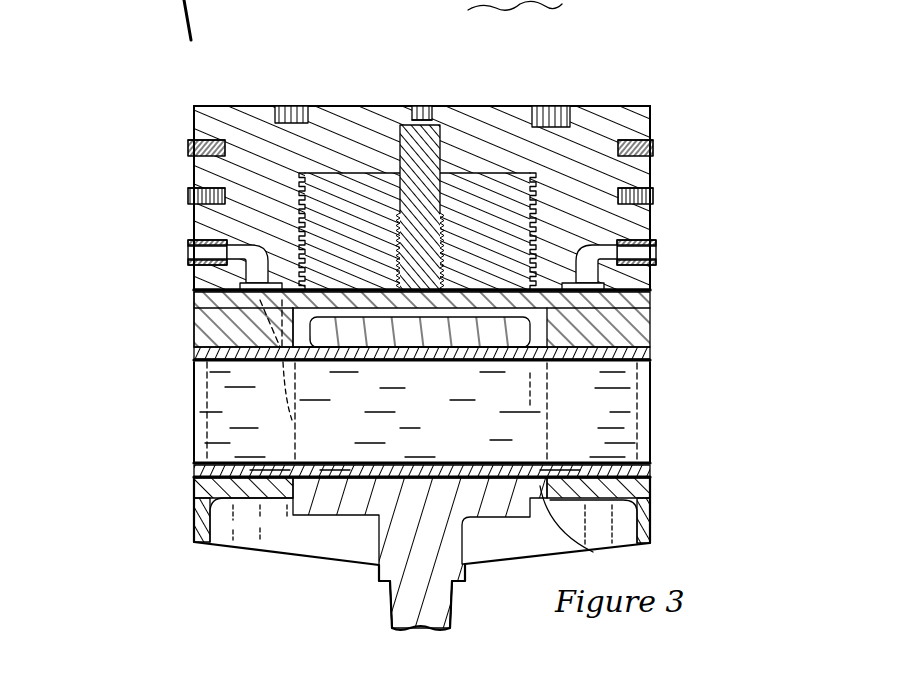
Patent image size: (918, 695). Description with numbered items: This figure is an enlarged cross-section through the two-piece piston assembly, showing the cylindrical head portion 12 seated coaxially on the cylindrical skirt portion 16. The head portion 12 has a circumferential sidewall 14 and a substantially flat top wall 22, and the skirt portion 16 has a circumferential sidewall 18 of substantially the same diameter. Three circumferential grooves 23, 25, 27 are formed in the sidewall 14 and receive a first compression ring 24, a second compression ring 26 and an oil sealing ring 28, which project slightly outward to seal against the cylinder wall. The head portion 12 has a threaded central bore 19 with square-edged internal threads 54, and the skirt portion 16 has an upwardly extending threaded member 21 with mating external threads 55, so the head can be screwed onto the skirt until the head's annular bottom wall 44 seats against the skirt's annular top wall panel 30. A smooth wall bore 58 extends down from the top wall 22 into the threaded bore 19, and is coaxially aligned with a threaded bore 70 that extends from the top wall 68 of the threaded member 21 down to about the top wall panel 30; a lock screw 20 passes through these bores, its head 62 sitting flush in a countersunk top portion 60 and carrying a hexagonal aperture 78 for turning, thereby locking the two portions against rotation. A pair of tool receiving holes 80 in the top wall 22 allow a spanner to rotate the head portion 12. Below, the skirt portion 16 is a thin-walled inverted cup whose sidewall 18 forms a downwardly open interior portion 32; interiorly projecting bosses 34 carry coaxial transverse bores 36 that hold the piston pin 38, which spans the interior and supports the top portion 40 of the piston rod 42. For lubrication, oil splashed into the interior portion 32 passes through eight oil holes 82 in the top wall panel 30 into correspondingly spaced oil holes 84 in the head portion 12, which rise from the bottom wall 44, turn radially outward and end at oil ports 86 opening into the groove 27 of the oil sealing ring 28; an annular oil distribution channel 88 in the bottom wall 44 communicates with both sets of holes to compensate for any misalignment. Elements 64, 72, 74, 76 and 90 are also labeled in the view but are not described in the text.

The head portion 12 is at (223, 128).
The sidewall of head portion 14 is at (194, 165).
The skirt portion 16 is at (650, 500).
The sidewall of skirt portion 18 is at (200, 500).
The threaded central bore 19 is at (556, 215).
The lock screw 20 is at (440, 128).
The threaded member 21 is at (470, 300).
The top wall 22 is at (250, 105).
The circumferential groove 23 is at (195, 128).
The first compression ring 24 is at (188, 143).
The circumferential groove 25 is at (217, 175).
The second compression ring 26 is at (188, 190).
The circumferential groove 27 is at (193, 240).
The oil sealing ring 28 is at (194, 252).
The annular top wall panel 30 is at (532, 300).
The interior portion 32 is at (593, 552).
The bosses 34 is at (193, 473).
The transverse bore 36 is at (213, 450).
The piston pin 38 is at (200, 400).
The top portion of piston rod 40 is at (333, 495).
The piston rod 42 is at (413, 598).
The annular bottom wall 44 is at (652, 313).
The internal threads 54 is at (217, 231).
The external threads 55 is at (356, 215).
The smooth wall bore 58 is at (487, 130).
The countersunk top portion 60 is at (372, 128).
The head of lock screw 62 is at (390, 107).
The hidden passage 64 is at (637, 412).
The top wall of threaded member 68 is at (597, 128).
The threaded bore of threaded member 70 is at (492, 215).
The cavity wall 72 is at (420, 300).
The support element bottom 74 is at (397, 295).
The hidden passage 76 is at (298, 386).
The hexagonal aperture 78 is at (415, 107).
The tool receiving holes 80 is at (290, 110).
The oil holes of skirt portion 82 is at (300, 422).
The oil holes of head portion 84 is at (220, 305).
The oil port 86 is at (232, 280).
The annular oil distribution channel 88 is at (260, 372).
The plate side wall 90 is at (193, 333).